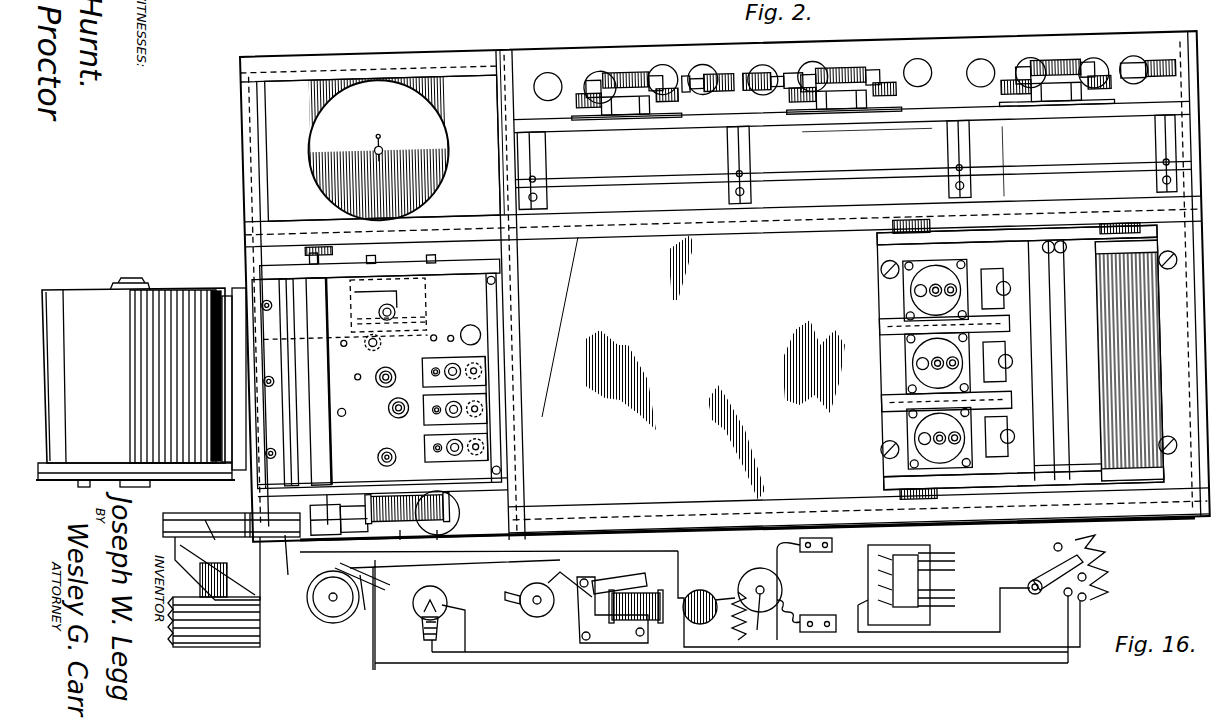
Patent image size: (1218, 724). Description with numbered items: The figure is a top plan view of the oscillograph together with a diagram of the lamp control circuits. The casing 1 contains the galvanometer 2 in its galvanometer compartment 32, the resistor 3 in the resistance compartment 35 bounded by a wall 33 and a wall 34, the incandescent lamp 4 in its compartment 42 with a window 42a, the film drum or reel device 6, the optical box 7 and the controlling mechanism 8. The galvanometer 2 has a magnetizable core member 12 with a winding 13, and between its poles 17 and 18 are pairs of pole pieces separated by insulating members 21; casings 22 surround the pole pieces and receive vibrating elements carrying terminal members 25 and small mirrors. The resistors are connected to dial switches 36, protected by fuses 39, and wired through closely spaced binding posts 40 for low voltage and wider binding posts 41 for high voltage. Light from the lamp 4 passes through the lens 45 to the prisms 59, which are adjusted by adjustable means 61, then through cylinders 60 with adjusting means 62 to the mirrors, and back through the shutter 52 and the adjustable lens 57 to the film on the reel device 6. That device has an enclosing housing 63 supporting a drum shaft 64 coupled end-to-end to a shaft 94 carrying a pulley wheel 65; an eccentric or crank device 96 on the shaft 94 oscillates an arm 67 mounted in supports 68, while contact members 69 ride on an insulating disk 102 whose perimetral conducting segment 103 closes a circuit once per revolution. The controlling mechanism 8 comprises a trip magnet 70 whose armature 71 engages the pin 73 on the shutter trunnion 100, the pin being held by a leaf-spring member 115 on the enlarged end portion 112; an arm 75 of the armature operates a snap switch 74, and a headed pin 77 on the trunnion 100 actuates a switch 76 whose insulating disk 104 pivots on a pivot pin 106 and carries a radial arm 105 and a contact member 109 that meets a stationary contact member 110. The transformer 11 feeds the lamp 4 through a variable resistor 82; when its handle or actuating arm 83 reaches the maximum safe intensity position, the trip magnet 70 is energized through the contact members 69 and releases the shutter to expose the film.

In FIG. 2, the casing 1 is at (246, 208).
In FIG. 2, the galvanometer 2 is at (880, 386).
In FIG. 2, the resistor 3 is at (843, 195).
In FIG. 2, the incandescent lamp 4 is at (410, 112).
In FIG. 16, the incandescent lamp 4 is at (433, 602).
In FIG. 2, the film drum or reel device 6 is at (156, 292).
In FIG. 2, the optical box 7 is at (575, 252).
In FIG. 2, the controlling mechanism 8 is at (478, 543).
In FIG. 16, the transformer 11 is at (953, 568).
In FIG. 2, the magnetizable core member 12 is at (1112, 492).
In FIG. 2, the winding 13 is at (1152, 387).
In FIG. 2, the pole 17 is at (882, 238).
In FIG. 2, the pole 18 is at (880, 477).
In FIG. 2, the insulating members 21 is at (1012, 395).
In FIG. 2, the casings 22 is at (885, 302).
In FIG. 2, the terminal members 25 is at (882, 355).
In FIG. 2, the galvanometer compartment 32 is at (718, 493).
In FIG. 2, the wall 33 is at (790, 215).
In FIG. 2, the wall 34 is at (996, 115).
In FIG. 2, the resistance compartment 35 is at (912, 135).
In FIG. 2, the dial switches 36 is at (626, 73).
In FIG. 2, the fuses 39 is at (632, 108).
In FIG. 2, the binding posts 40 is at (700, 72).
In FIG. 2, the binding posts 41 is at (560, 76).
In FIG. 2, the lamp compartment 42 is at (463, 97).
In FIG. 2, the window 42a is at (378, 58).
In FIG. 2, the lens 45 is at (398, 312).
In FIG. 2, the shutter 52 is at (366, 350).
In FIG. 2, the adjustable lens 57 is at (262, 285).
In FIG. 2, the prisms 59 is at (385, 405).
In FIG. 2, the cylinders 60 is at (487, 443).
In FIG. 2, the adjustable means 61 is at (390, 372).
In FIG. 2, the adjusting means 62 is at (455, 365).
In FIG. 2, the enclosing housing 63 is at (72, 470).
In FIG. 2, the drum shaft 64 is at (110, 518).
In FIG. 2, the pulley wheel 65 is at (222, 636).
In FIG. 2, the arm 67 is at (265, 534).
In FIG. 2, the supports 68 is at (205, 520).
In FIG. 2, the contact members 69 is at (371, 616).
In FIG. 2, the trip magnet 70 is at (458, 511).
In FIG. 16, the trip magnet 70 is at (598, 612).
In FIG. 2, the armature 71 is at (447, 545).
In FIG. 16, the armature 71 is at (640, 580).
In FIG. 2, the pin 73 is at (297, 563).
In FIG. 16, the snap switch 74 is at (533, 612).
In FIG. 16, the arm 75 is at (562, 582).
In FIG. 2, the switch 76 is at (387, 456).
In FIG. 16, the switch 76 is at (785, 600).
In FIG. 2, the headed pin 77 is at (335, 490).
In FIG. 16, the headed pin 77 is at (714, 620).
In FIG. 16, the variable resistor 82 is at (1108, 566).
In FIG. 16, the handle or actuating arm 83 is at (1048, 570).
In FIG. 2, the shaft 94 is at (329, 597).
In FIG. 2, the eccentric or crank device 96 is at (227, 582).
In FIG. 2, the end trunnion or shaft 100 is at (370, 503).
In FIG. 16, the end trunnion or shaft 100 is at (725, 595).
In FIG. 2, the insulating disk or drum 102 is at (322, 612).
In FIG. 2, the perimetral conducting segment 103 is at (364, 612).
In FIG. 16, the insulating disk 104 is at (762, 612).
In FIG. 2, the radial arm 105 is at (363, 420).
In FIG. 16, the radial arm 105 is at (704, 591).
In FIG. 16, the pivot pin or shaft 106 is at (760, 585).
In FIG. 16, the contact member 109 is at (795, 560).
In FIG. 16, the stationary contact member 110 is at (797, 550).
In FIG. 2, the enlarged outer end portion 112 is at (310, 515).
In FIG. 2, the leaf-spring member 115 is at (356, 541).